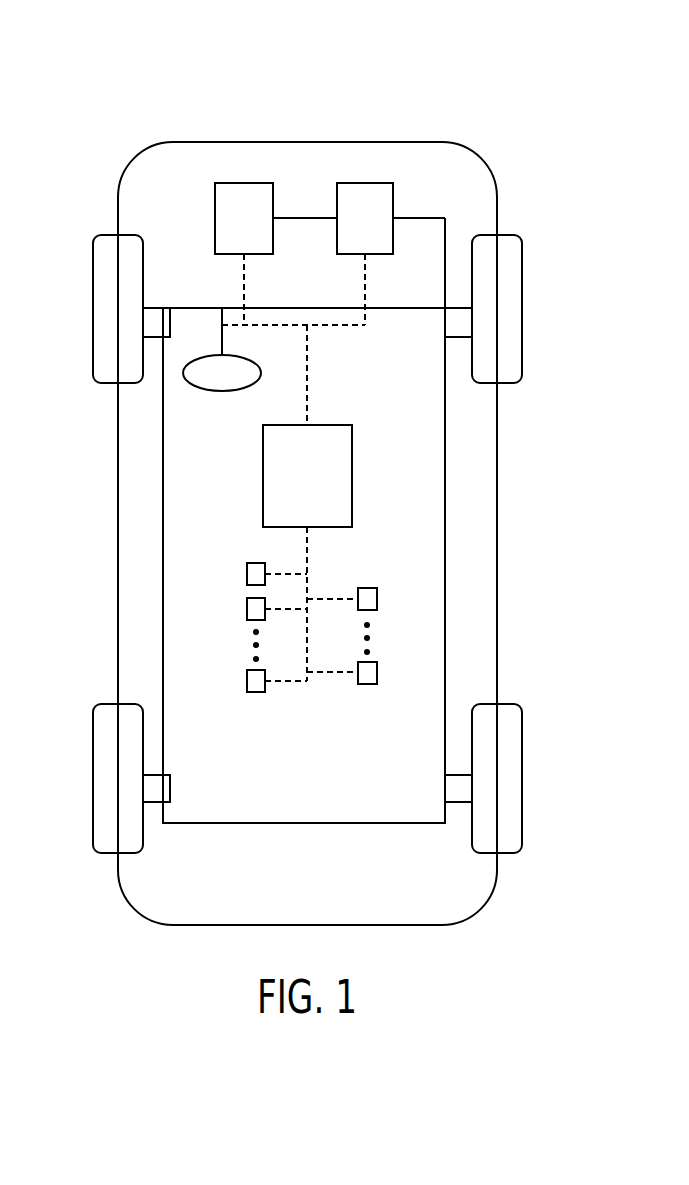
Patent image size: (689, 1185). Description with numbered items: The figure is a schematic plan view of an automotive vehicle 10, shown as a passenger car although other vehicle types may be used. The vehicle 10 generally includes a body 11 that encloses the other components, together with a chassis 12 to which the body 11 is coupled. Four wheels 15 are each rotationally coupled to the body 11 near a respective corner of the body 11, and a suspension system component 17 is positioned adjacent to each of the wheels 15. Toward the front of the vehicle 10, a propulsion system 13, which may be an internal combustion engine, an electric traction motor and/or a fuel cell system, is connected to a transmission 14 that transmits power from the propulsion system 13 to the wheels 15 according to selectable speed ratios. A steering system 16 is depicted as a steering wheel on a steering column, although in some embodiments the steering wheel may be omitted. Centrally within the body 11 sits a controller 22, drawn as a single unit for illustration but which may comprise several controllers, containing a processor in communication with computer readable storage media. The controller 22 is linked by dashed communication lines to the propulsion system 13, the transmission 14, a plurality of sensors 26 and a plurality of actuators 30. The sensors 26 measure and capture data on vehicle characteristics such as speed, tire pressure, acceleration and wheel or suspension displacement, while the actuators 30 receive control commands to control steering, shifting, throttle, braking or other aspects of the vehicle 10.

The vehicle 10 is at (326, 97).
The body 11 is at (497, 538).
The chassis 12 is at (445, 496).
The propulsion system 13 is at (215, 199).
The transmission 14 is at (393, 200).
The wheels 15 is at (143, 285).
The steering system 16 is at (222, 392).
The suspension system component 17 is at (155, 327).
The controller 22 is at (352, 485).
The sensors 26 is at (247, 574).
The actuators 30 is at (377, 598).